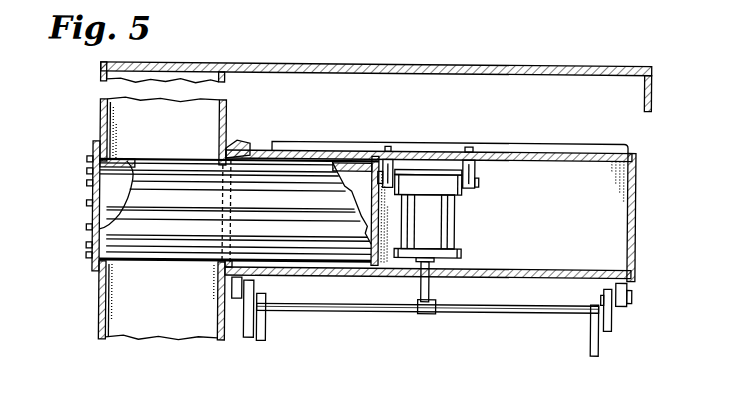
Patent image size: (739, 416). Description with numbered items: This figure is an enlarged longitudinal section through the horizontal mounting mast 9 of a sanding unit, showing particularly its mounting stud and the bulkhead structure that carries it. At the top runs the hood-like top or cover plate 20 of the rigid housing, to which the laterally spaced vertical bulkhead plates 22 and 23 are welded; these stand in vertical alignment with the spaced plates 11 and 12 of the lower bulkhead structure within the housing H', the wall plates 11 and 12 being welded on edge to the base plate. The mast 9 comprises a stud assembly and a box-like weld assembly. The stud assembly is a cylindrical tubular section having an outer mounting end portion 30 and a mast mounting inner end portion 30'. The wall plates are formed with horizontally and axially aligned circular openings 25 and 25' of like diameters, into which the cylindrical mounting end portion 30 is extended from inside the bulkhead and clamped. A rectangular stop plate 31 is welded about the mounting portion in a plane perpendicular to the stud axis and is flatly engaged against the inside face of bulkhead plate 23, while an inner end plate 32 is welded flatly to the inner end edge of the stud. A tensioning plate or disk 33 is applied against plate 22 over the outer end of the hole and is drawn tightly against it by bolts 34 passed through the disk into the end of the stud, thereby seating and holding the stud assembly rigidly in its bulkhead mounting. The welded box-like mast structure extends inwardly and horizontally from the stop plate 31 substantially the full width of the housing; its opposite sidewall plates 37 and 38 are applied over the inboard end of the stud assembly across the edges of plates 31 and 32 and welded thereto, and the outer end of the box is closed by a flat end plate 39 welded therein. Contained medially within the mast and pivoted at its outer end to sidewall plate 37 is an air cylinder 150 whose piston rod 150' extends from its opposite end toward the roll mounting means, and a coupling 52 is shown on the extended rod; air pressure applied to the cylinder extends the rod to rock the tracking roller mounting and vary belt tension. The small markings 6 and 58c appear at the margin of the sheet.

The section line 6 is at (176, 0).
The element 58c is at (504, 0).
The top or cover plate 20 is at (366, 63).
The vertical plate 22 is at (100, 118).
The vertical plate 23 is at (226, 114).
The circular opening 25 is at (132, 139).
The circular opening 25' is at (218, 141).
The stop plate 31 is at (240, 146).
The outer mounting end portion 30 is at (239, 228).
The mast mounting inner end portion 30' is at (342, 188).
The mast 9 is at (446, 146).
The sidewall plate 37 is at (562, 150).
The sidewall plate 38 is at (516, 276).
The flat end plate 39 is at (634, 250).
The tensioning plate or disk 33 is at (93, 152).
The bolts 34 is at (88, 205).
The inner end plate 32 is at (400, 208).
The air cylinder 150 is at (487, 235).
The piston rod 150' is at (452, 281).
The coupling block 52 is at (437, 309).
The housing H' is at (68, 315).
The vertical plate 11 is at (100, 330).
The vertical plate 12 is at (226, 345).